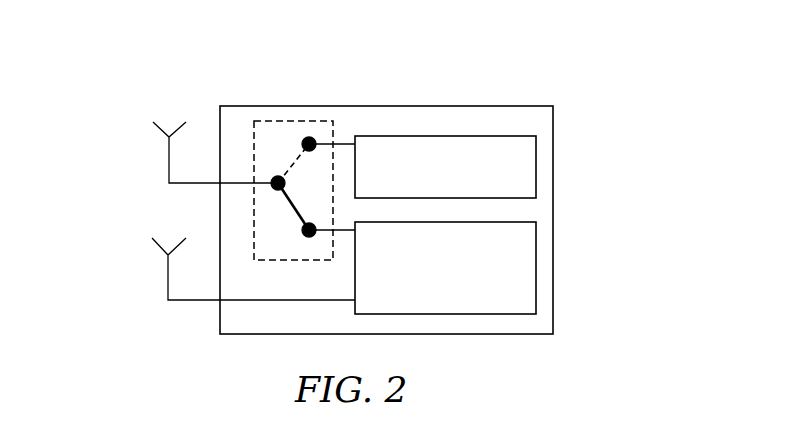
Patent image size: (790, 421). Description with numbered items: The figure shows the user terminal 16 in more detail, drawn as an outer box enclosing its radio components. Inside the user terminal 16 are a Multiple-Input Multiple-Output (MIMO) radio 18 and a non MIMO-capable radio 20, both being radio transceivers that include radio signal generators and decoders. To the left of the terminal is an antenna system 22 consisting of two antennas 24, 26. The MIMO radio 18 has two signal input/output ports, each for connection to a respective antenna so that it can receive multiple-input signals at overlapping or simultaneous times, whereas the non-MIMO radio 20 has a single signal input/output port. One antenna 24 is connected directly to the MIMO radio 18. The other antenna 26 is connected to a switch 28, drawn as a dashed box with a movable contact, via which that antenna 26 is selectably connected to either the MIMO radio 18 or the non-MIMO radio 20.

The user terminal 16 is at (577, 232).
The MIMO radio 18 is at (528, 301).
The non MIMO-capable radio 20 is at (485, 140).
The antenna system 22 is at (145, 209).
The antenna 24 is at (168, 277).
The antenna 26 is at (169, 160).
The switch 28 is at (293, 120).